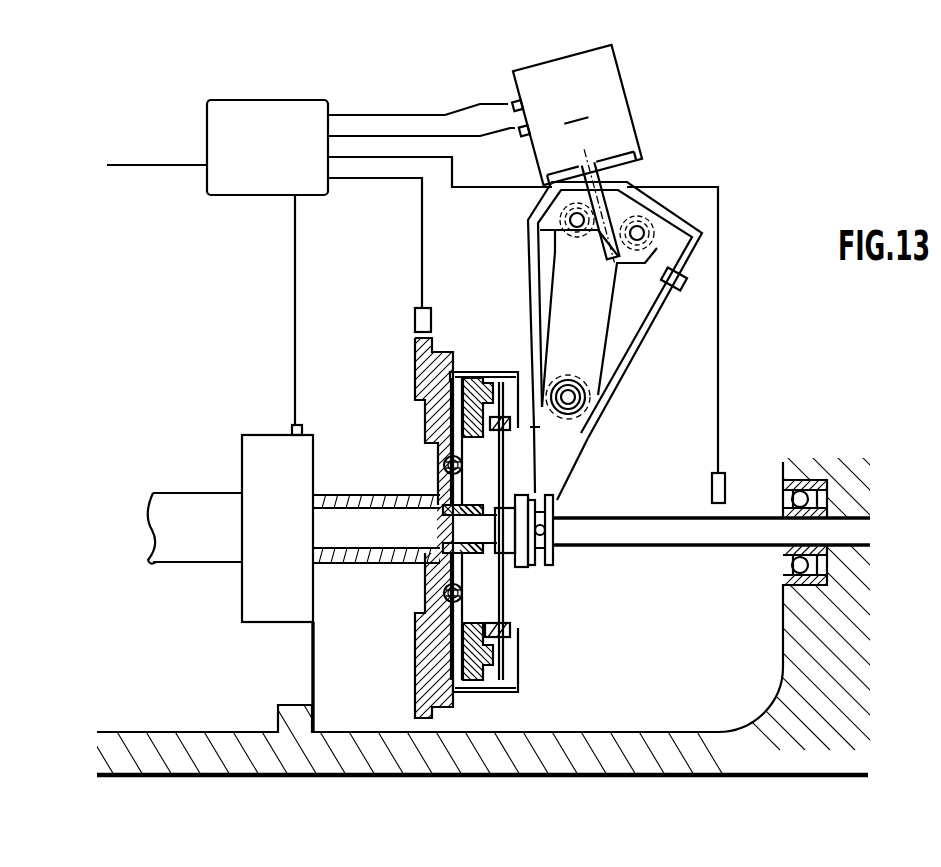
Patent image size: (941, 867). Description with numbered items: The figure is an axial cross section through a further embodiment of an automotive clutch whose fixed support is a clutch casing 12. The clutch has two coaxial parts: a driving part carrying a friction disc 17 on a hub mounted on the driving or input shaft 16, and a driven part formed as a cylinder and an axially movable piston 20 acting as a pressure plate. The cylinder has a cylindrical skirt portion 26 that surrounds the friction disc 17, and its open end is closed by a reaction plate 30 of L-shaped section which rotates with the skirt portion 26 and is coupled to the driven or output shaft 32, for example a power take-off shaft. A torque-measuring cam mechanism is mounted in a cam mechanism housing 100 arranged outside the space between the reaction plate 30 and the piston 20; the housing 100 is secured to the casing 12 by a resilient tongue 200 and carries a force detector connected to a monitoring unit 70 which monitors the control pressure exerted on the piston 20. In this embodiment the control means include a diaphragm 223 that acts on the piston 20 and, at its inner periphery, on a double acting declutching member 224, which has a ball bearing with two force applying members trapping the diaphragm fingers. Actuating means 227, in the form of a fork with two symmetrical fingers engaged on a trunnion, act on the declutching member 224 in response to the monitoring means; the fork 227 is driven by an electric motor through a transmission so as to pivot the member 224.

The clutch casing 12 is at (575, 747).
The driving or input shaft 16 is at (755, 488).
The friction disc 17 is at (415, 668).
The piston 20 is at (471, 380).
The cylindrical skirt portion 26 is at (518, 676).
The reaction plate 30 is at (438, 350).
The driven or output shaft 32 is at (200, 515).
The monitoring unit 70 is at (278, 164).
The cam mechanism housing 100 is at (272, 428).
The resilient tongue 200 is at (312, 654).
The diaphragm 223 is at (505, 600).
The declutching member 224 is at (522, 577).
The actuating means 227 is at (560, 465).